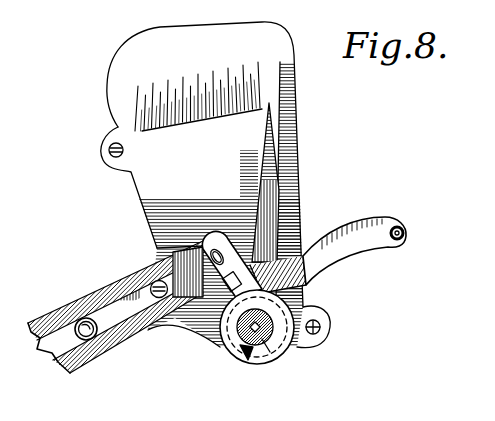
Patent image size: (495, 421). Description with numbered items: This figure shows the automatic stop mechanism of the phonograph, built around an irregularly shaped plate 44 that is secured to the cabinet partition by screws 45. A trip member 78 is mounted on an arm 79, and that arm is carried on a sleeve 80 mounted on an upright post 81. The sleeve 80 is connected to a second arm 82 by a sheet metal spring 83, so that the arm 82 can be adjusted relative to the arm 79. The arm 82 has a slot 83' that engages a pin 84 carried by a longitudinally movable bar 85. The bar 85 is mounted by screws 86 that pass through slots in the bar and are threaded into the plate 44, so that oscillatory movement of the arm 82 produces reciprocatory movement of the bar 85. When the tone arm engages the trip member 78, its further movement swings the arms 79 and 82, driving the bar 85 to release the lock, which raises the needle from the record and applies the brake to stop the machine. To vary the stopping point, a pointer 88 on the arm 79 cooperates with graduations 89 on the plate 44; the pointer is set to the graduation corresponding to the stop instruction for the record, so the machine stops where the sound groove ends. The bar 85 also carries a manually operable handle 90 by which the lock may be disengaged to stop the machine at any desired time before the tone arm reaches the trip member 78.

The plate 44 is at (280, 109).
The screws 45 is at (115, 158).
The trip member 78 is at (400, 228).
The arm 79 is at (335, 230).
The sleeve 80 is at (278, 352).
The upright post 81 is at (247, 342).
The arm 82 is at (213, 239).
The sheet metal spring 83 is at (225, 365).
The slot 83' is at (197, 227).
The pin 84 is at (221, 247).
The bar 85 is at (117, 312).
The screws 86 is at (157, 298).
The pointer 88 is at (278, 177).
The graduations 89 is at (190, 124).
The handle 90 is at (77, 320).